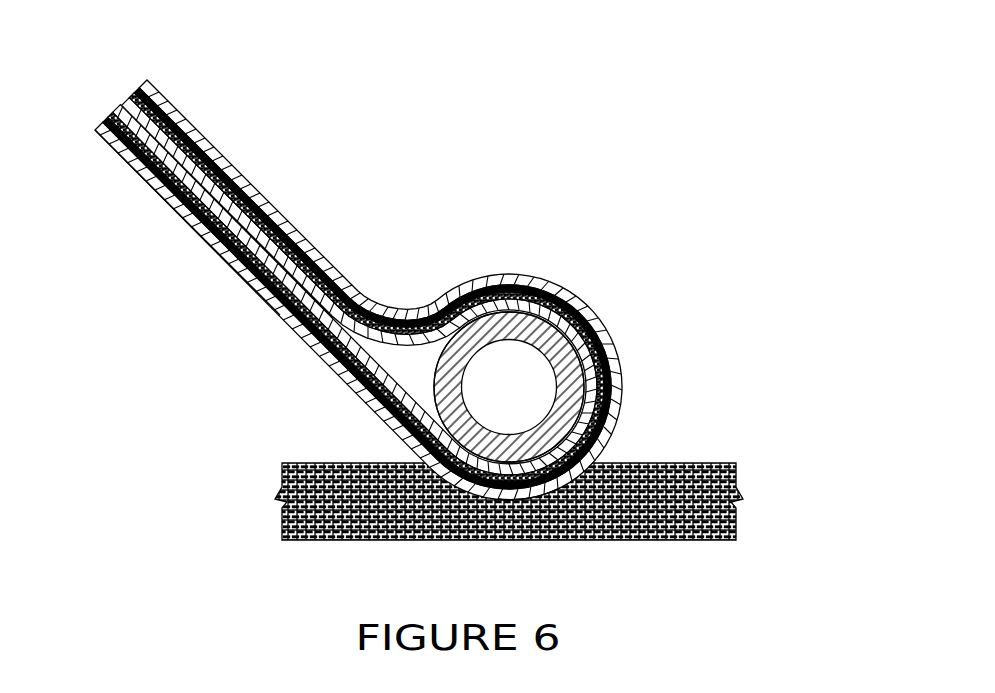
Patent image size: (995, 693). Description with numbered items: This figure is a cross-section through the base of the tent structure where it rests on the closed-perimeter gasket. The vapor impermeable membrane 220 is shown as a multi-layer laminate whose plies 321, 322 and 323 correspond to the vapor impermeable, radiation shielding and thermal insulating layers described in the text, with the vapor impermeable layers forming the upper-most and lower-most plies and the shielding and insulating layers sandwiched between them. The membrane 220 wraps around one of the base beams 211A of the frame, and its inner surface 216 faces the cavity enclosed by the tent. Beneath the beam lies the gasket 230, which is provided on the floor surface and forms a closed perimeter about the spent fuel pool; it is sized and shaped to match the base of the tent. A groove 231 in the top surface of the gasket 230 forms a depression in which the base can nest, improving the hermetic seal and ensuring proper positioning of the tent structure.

The vapor impermeable membrane 220 is at (358, 253).
The insulating layer 321 is at (230, 202).
The conductive layer 322 is at (258, 205).
The adhesive layer 323 is at (283, 223).
The inner surface 216 is at (172, 207).
The beam 211A is at (575, 402).
The groove 231 is at (533, 495).
The gasket 230 is at (633, 462).